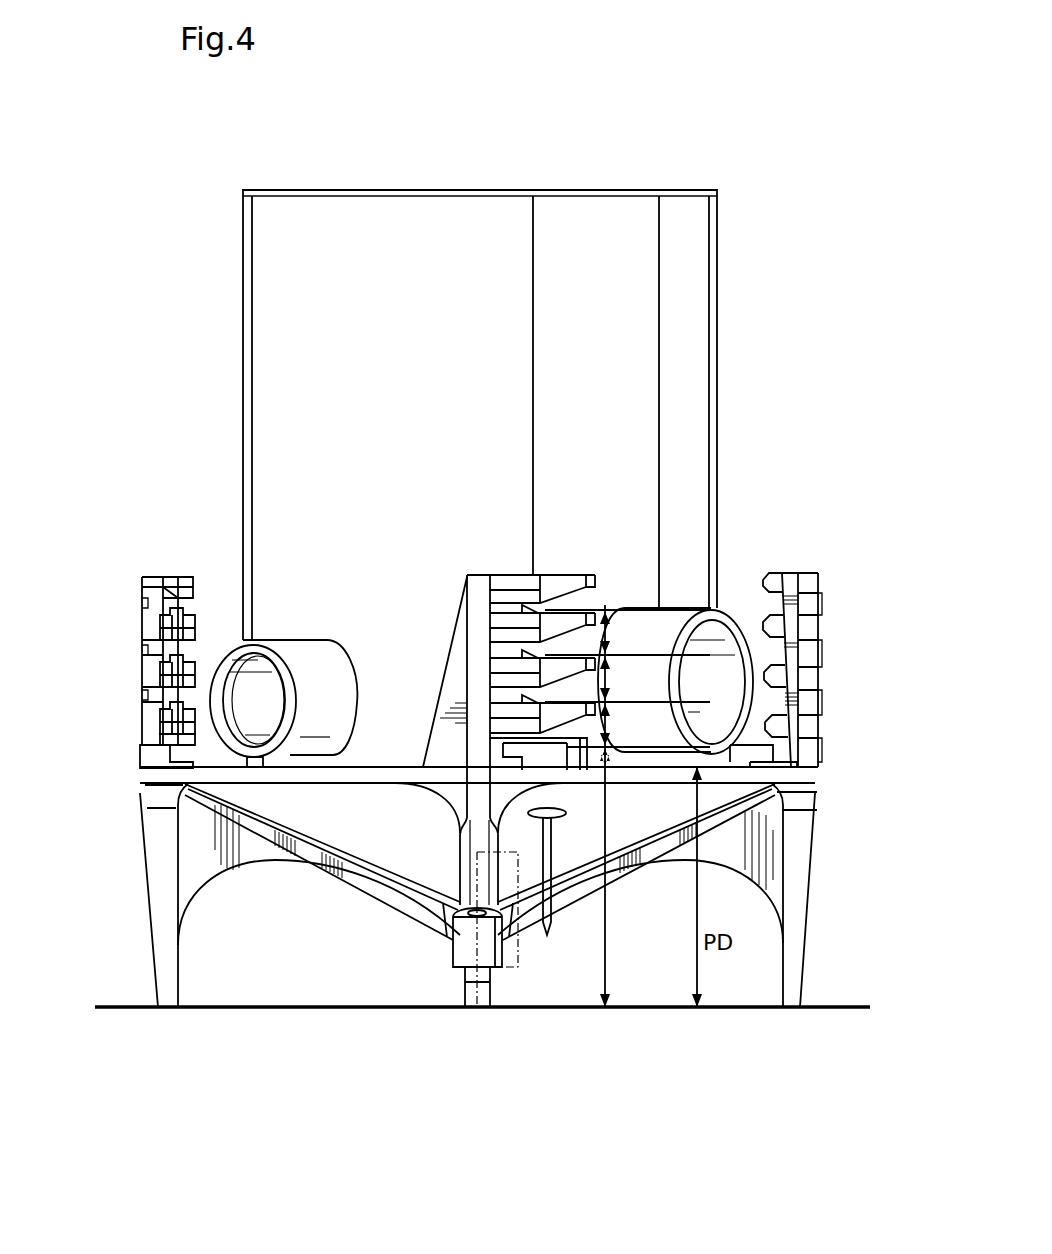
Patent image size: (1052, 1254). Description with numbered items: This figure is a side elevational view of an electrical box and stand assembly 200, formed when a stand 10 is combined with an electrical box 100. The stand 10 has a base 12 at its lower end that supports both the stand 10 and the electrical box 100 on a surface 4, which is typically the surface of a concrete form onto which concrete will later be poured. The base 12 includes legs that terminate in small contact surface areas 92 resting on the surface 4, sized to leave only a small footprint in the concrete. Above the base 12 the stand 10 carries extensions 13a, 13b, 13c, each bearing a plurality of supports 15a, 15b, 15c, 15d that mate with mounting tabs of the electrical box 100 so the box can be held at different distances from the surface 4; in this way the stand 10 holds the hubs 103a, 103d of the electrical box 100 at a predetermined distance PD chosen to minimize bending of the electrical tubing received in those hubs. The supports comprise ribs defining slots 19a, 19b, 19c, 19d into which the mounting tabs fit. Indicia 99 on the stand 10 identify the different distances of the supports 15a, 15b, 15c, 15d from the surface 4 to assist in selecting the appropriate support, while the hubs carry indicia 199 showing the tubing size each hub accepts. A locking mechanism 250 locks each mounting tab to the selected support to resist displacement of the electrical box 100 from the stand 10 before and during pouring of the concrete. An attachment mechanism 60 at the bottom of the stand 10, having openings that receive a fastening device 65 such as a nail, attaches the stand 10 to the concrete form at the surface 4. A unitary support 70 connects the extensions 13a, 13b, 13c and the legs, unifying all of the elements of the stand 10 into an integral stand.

The electrical box and stand assembly 200 is at (735, 168).
The electrical box 100 is at (735, 318).
The stand 10 is at (832, 655).
The base 12 is at (825, 888).
The surface 4 is at (824, 1002).
The contact surface area 92 is at (150, 1014).
The attachment mechanism 60 is at (450, 962).
The fastening device 65 is at (556, 928).
The unitary support 70 is at (330, 784).
The locking mechanism 250 is at (500, 764).
The indicia 99 is at (465, 752).
The extension 13a is at (158, 570).
The extension 13b is at (507, 570).
The extension 13c is at (822, 592).
The support 15a is at (153, 600).
The support 15b is at (136, 676).
The support 15c is at (136, 738).
The support 15d is at (136, 772).
The slot 19a is at (136, 619).
The slot 19b is at (136, 658).
The slot 19c is at (136, 720).
The slot 19d is at (163, 766).
The hub 103a is at (708, 605).
The hub 103d is at (342, 640).
The indicia 199 is at (312, 605).